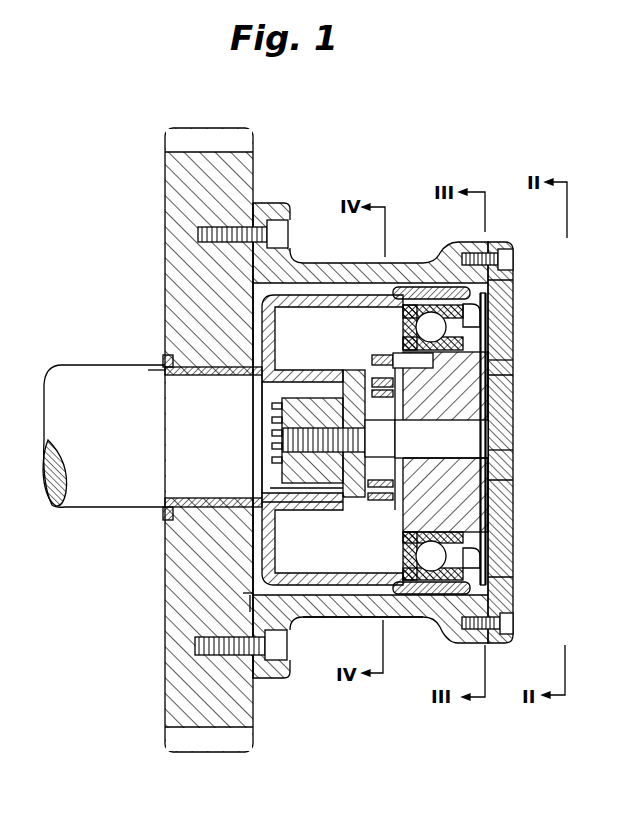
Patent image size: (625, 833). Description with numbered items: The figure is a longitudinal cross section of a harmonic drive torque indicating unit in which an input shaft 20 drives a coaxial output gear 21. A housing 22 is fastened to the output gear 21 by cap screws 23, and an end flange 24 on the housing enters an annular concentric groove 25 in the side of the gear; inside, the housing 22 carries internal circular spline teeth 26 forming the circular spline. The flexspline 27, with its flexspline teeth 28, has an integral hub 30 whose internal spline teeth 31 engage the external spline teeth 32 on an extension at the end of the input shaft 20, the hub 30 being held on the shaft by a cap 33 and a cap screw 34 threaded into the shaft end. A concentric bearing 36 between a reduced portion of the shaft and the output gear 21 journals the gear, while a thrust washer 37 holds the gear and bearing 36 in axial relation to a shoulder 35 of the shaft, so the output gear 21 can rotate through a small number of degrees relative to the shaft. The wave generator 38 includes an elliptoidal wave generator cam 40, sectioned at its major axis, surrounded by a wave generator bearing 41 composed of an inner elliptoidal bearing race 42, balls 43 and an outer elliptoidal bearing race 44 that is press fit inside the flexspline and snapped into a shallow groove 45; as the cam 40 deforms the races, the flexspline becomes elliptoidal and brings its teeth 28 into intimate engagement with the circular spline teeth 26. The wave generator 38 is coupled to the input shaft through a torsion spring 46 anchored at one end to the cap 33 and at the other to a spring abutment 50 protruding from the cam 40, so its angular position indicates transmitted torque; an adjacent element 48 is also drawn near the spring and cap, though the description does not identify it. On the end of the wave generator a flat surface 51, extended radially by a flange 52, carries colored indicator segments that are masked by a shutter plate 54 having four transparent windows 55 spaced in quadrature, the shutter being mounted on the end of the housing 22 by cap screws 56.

The input shaft 20 is at (124, 428).
The output gear 21 is at (207, 138).
The housing 22 is at (330, 266).
The cap screws 23 is at (276, 651).
The end flange 24 is at (246, 594).
The annular concentric groove 25 is at (249, 610).
The internal circular spline teeth 26 is at (432, 600).
The flexspline 27 is at (340, 305).
The flexspline teeth 28 is at (427, 288).
The hub 30 is at (298, 505).
The internal spline teeth 31 is at (327, 493).
The external spline teeth 32 is at (270, 403).
The cap 33 is at (356, 376).
The cap screw 34 is at (377, 452).
The shoulder 35 is at (163, 373).
The bearing 36 is at (206, 377).
The thrust washer 37 is at (258, 493).
The wave generator 38 is at (472, 502).
The wave generator cam 40 is at (435, 473).
The wave generator bearing 41 is at (422, 556).
The inner elliptoidal bearing race 42 is at (404, 534).
The balls 43 is at (418, 327).
The outer elliptoidal bearing race 44 is at (462, 574).
The shallow groove 45 is at (420, 594).
The torsion spring 46 is at (377, 503).
The nut 48 is at (388, 362).
The spring abutment 50 is at (425, 363).
The flat surface 51 is at (509, 370).
The flange 52 is at (484, 300).
The shutter plate 54 is at (509, 460).
The transparent windows 55 is at (509, 323).
The cap screws 56 is at (511, 260).